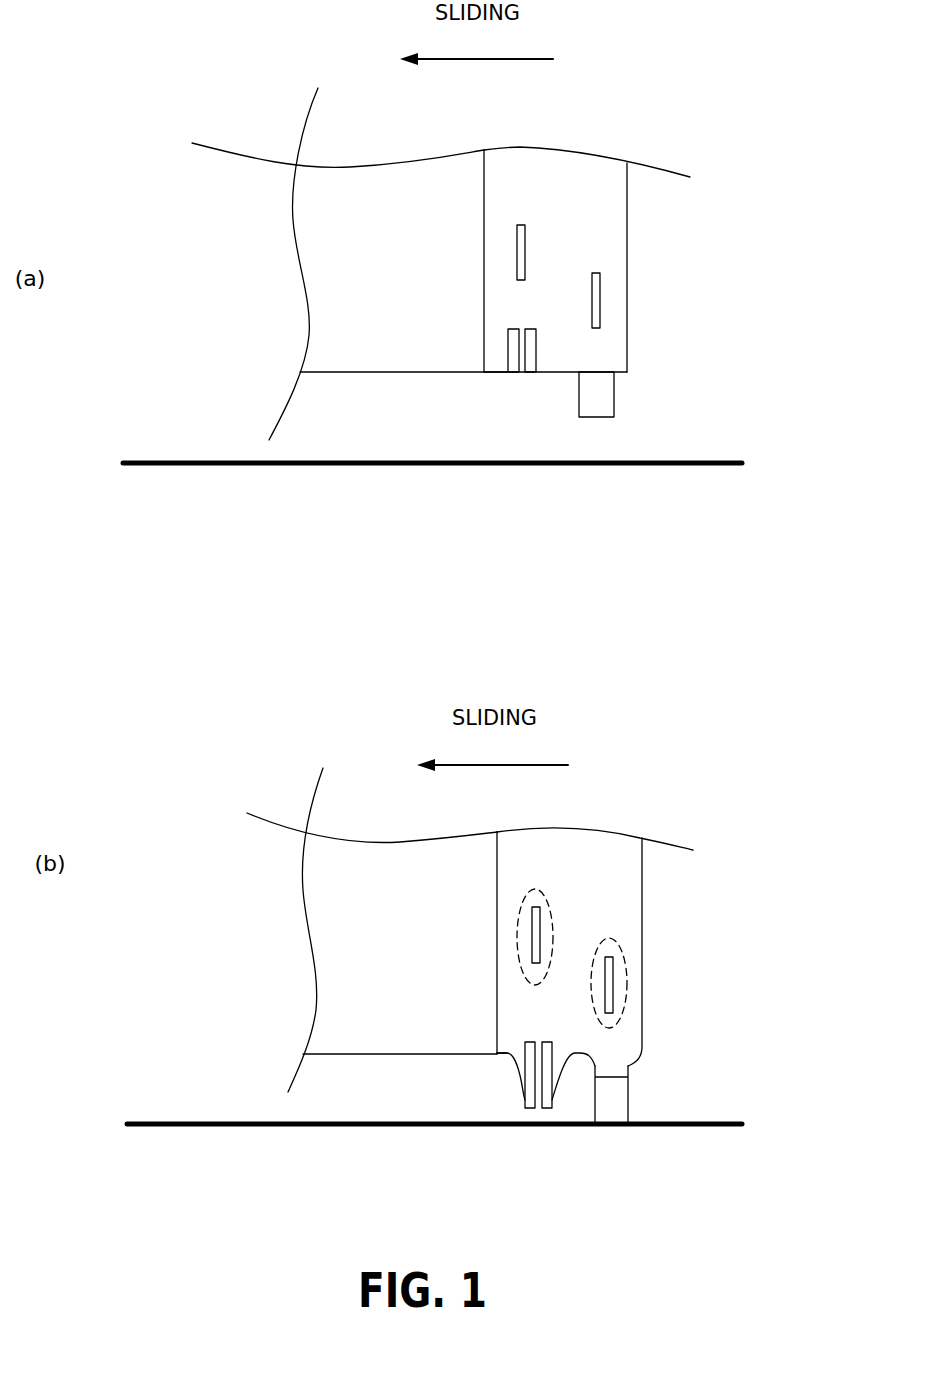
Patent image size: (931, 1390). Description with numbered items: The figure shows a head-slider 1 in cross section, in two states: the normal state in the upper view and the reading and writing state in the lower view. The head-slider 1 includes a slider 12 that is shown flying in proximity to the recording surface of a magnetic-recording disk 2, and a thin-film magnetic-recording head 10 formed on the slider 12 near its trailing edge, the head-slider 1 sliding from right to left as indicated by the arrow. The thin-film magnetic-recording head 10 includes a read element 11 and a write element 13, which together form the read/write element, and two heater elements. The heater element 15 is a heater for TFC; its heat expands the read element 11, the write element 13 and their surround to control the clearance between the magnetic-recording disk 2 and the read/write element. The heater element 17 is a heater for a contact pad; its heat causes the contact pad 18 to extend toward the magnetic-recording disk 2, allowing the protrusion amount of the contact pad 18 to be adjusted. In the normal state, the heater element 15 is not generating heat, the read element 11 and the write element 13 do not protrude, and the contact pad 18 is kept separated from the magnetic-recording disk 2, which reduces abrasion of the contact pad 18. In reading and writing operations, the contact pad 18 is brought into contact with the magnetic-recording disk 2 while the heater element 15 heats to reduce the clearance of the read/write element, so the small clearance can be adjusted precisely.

The head-slider 1 is at (758, 266).
The magnetic-recording disk 2 is at (725, 460).
The thin-film magnetic-recording head 10 is at (627, 240).
The read element 11 is at (506, 340).
The slider 12 is at (365, 286).
The write element 13 is at (536, 345).
The heater element for TFC 15 is at (525, 251).
The heater element for contact pad 17 is at (600, 298).
The contact pad 18 is at (614, 392).